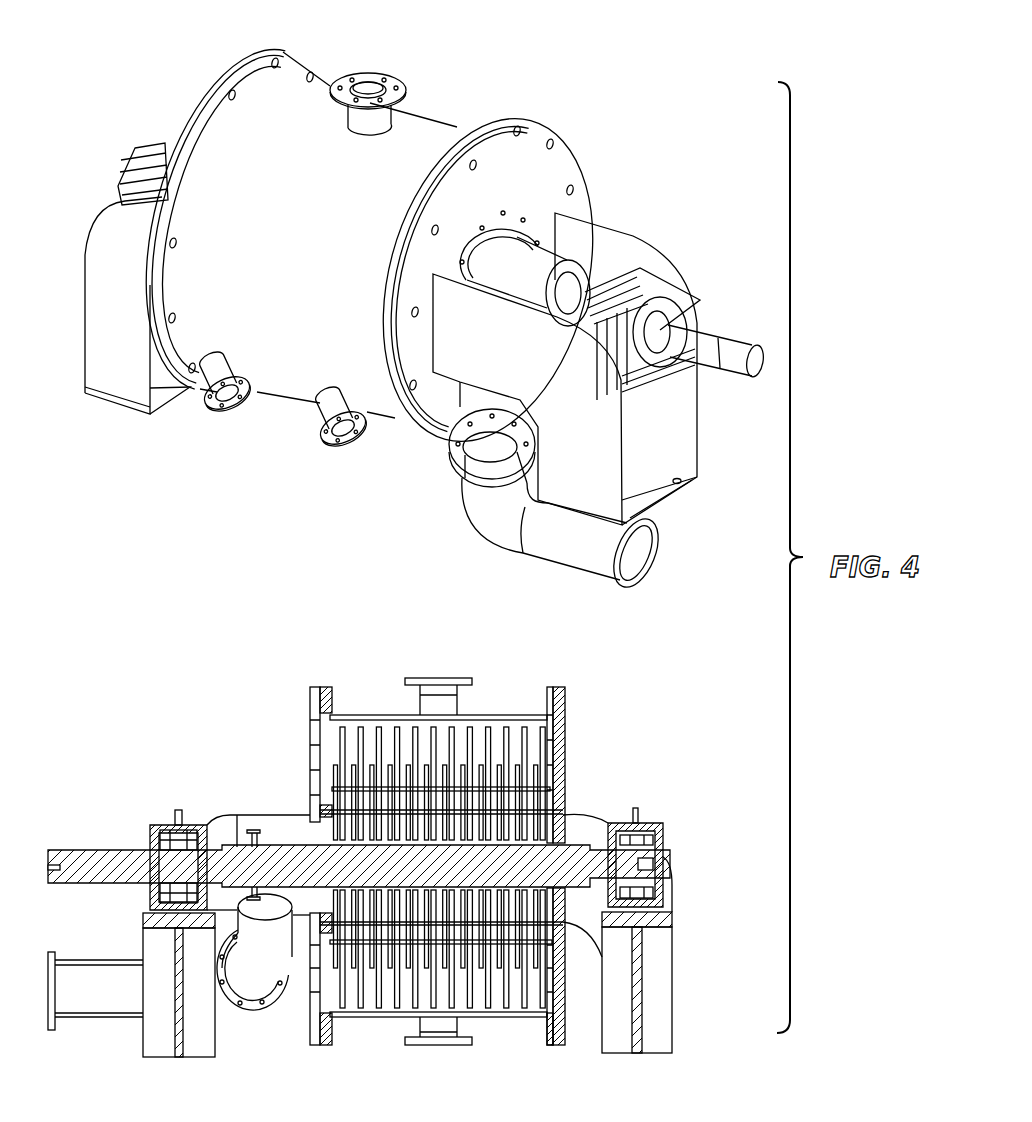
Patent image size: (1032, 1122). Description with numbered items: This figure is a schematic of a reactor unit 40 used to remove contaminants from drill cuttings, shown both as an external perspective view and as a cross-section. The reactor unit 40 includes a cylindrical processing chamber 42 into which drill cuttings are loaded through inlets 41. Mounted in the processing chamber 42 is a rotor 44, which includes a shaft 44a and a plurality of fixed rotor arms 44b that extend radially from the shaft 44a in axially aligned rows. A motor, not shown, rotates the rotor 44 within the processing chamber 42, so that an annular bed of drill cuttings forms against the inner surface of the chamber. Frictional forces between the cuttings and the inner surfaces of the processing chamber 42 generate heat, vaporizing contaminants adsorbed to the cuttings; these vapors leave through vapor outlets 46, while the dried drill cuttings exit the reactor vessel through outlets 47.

The reactor unit 40 is at (226, 36).
The inlet 41 is at (222, 405).
The cylindrical processing chamber 42 is at (314, 390).
The rotor 44 is at (670, 698).
The shaft 44a is at (573, 850).
The fixed rotor arms 44b is at (493, 770).
The vapor outlet 46 is at (368, 82).
The outlet 47 is at (386, 450).